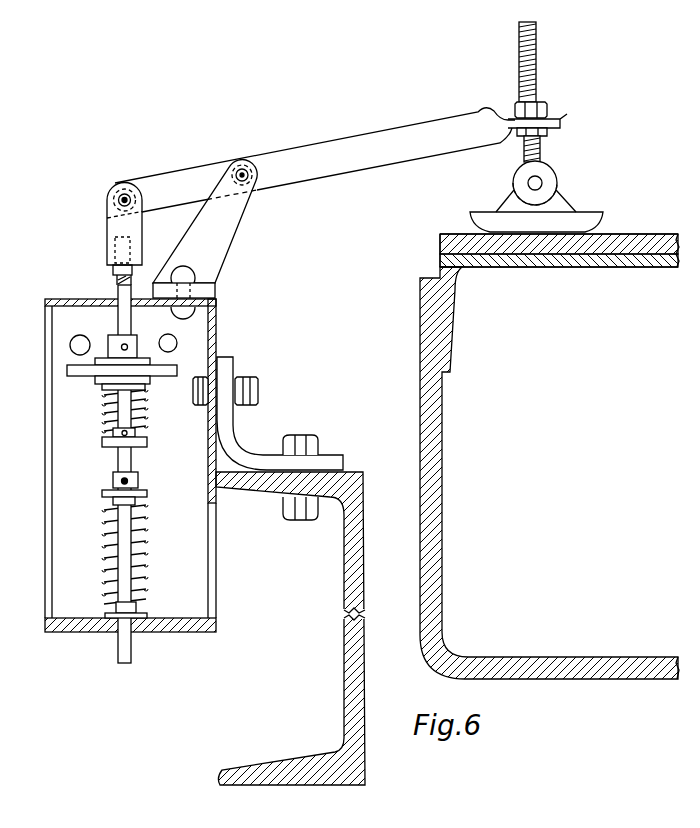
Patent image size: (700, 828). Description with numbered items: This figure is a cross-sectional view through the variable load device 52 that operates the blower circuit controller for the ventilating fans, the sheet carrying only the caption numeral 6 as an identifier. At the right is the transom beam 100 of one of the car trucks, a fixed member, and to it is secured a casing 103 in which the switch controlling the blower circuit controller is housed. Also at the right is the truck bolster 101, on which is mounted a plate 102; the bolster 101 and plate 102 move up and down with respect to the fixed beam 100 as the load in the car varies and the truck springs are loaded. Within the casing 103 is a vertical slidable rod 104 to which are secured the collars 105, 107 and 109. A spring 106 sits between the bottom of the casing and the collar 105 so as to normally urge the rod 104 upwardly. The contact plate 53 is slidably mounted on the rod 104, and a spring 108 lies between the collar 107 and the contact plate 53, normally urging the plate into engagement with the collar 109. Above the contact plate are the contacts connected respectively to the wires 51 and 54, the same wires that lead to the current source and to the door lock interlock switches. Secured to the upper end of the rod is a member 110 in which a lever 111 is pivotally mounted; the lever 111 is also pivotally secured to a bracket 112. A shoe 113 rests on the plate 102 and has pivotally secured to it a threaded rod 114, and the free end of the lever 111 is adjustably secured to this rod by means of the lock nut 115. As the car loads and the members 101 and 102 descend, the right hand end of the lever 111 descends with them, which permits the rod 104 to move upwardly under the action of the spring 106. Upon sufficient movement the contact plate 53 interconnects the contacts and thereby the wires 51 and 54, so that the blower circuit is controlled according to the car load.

The partial numeral at sheet edge 6 is at (4, 344).
The wire 51 is at (94, 321).
The variable load device 52 is at (349, 328).
The contact plate 53 is at (75, 378).
The wire 54 is at (202, 322).
The transom beam 100 is at (365, 563).
The truck bolster 101 is at (443, 396).
The plate 102 is at (650, 233).
The casing 103 is at (216, 500).
The vertical slidable rod 104 is at (127, 556).
The collar 105 is at (138, 481).
The spring 106 is at (146, 523).
The collar 107 is at (147, 441).
The spring 108 is at (147, 412).
The collar 109 is at (131, 341).
The member 110 is at (107, 233).
The lever 111 is at (318, 175).
The bracket 112 is at (236, 228).
The shoe 113 is at (558, 196).
The threaded rod 114 is at (541, 147).
The lock nut 115 is at (548, 113).